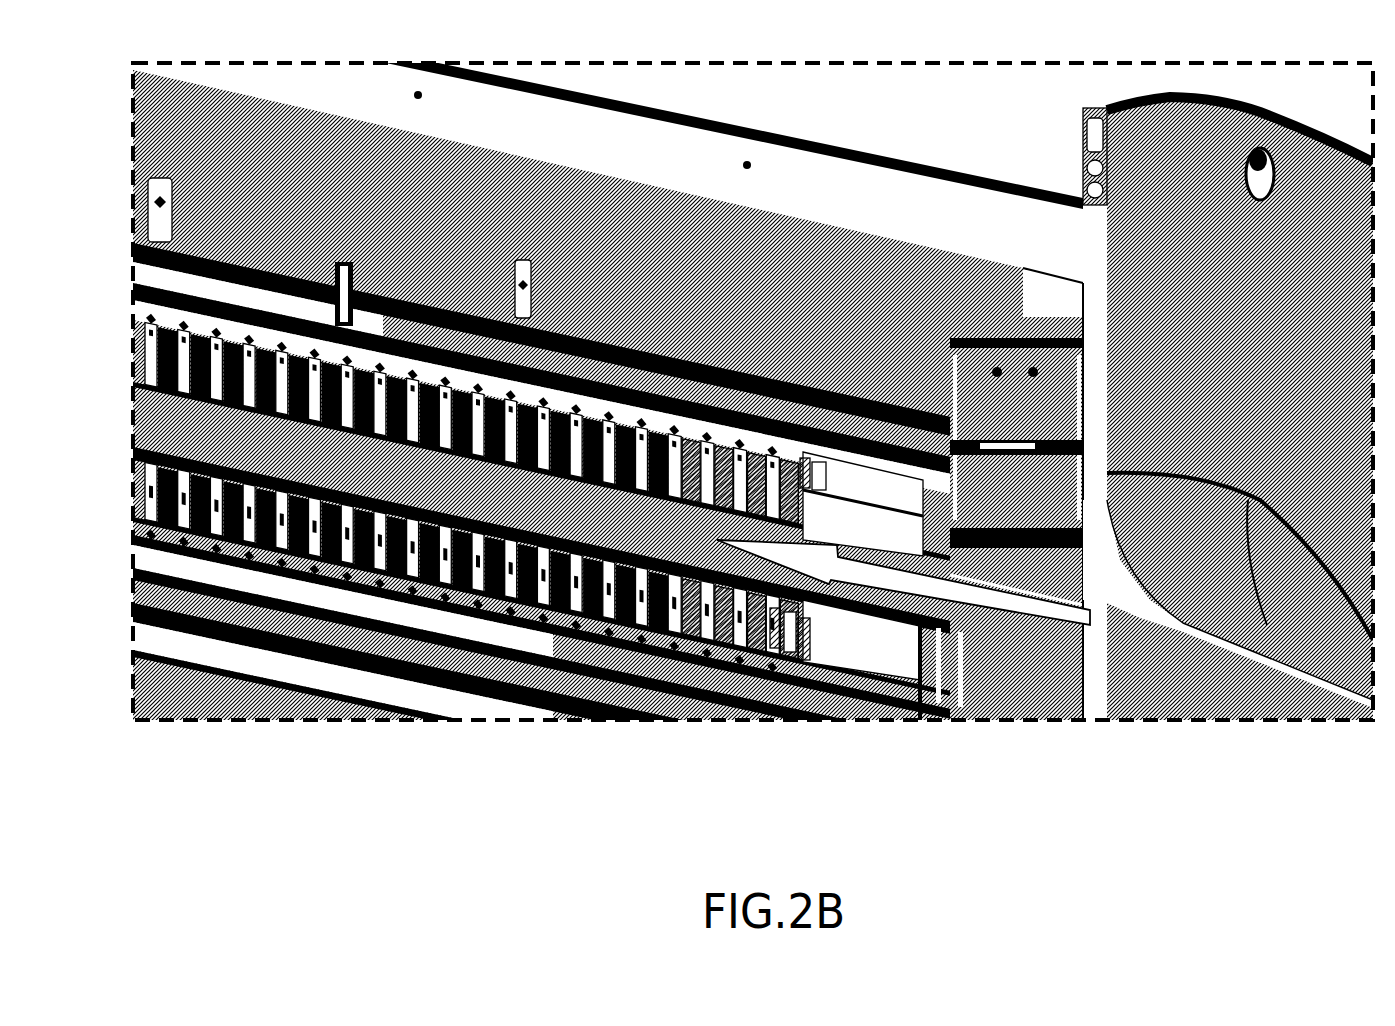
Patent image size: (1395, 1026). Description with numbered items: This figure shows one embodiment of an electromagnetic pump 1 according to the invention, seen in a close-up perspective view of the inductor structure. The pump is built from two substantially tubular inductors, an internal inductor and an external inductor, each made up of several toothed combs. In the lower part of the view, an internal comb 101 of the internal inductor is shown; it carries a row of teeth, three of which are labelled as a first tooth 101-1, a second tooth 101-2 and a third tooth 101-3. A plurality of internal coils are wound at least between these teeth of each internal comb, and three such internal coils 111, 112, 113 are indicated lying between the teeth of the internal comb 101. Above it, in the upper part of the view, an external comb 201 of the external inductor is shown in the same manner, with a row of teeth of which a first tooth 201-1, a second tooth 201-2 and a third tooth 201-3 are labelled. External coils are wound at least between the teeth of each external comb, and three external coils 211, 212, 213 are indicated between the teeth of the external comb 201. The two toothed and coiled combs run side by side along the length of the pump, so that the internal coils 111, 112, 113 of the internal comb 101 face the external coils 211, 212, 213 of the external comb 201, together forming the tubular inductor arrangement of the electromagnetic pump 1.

The electronic device 1 is at (628, 88).
The internal comb 101 is at (897, 677).
The tooth of internal comb 101-1 is at (790, 640).
The tooth of internal comb 101-2 is at (755, 642).
The tooth of internal comb 101-3 is at (720, 623).
The internal coil 111 is at (810, 660).
The internal coil 112 is at (772, 643).
The internal coil 113 is at (740, 630).
The external comb 201 is at (873, 478).
The tooth of external comb 201-1 is at (820, 475).
The tooth of external comb 201-2 is at (790, 475).
The tooth of external comb 201-3 is at (707, 470).
The external coil 211 is at (840, 478).
The external coil 212 is at (802, 478).
The external coil 213 is at (743, 475).